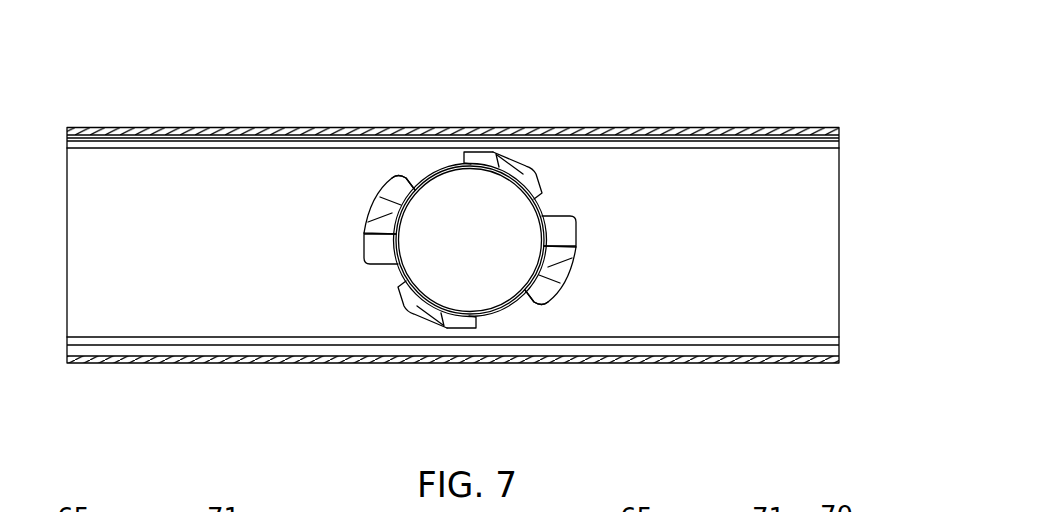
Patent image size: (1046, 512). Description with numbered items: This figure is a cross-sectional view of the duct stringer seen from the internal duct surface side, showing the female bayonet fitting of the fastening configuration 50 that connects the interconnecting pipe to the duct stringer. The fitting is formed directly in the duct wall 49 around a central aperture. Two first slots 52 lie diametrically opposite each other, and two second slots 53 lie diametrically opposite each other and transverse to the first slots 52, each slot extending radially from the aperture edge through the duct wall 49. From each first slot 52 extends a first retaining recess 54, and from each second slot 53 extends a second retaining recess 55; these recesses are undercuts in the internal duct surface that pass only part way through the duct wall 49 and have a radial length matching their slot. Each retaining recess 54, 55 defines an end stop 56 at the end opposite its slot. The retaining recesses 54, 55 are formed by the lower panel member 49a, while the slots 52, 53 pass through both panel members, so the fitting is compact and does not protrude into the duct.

The duct wall 49 is at (803, 204).
The lower panel member 49a is at (175, 317).
The fastening configuration 50 is at (667, 79).
The first slot 52 is at (390, 187).
The second slot 53 is at (536, 172).
The first retaining recess 54 is at (378, 224).
The second retaining recess 55 is at (510, 158).
The end stop 56 is at (380, 264).